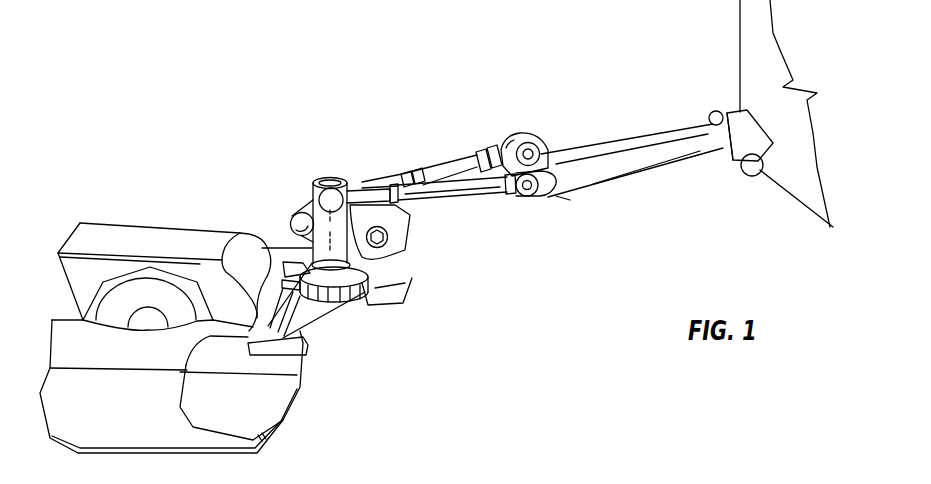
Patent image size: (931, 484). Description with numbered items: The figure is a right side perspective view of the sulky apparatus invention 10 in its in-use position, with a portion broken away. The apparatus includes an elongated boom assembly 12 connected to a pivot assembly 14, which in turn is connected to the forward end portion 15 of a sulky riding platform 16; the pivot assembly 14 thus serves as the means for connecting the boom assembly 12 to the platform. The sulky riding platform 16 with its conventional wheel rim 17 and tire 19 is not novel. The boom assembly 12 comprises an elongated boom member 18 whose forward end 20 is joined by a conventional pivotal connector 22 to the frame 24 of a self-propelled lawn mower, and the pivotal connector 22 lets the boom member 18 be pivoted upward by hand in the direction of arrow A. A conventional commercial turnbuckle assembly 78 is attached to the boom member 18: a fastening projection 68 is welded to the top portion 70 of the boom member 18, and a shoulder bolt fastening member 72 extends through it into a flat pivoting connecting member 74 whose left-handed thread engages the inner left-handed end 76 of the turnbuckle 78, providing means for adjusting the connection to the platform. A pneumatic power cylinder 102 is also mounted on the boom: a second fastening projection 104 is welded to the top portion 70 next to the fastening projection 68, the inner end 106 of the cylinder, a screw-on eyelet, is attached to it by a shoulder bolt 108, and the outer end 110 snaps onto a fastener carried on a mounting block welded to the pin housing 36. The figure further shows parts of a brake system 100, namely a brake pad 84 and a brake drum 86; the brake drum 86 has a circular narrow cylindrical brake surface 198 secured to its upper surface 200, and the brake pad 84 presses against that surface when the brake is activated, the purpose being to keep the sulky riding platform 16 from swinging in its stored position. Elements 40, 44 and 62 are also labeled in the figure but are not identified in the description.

The sulky apparatus invention 10 is at (367, 121).
The elongated boom assembly 12 is at (517, 127).
The pivot assembly 14 is at (318, 178).
The forward end portion 15 is at (316, 330).
The sulky riding platform 16 is at (128, 238).
The wheel rim 17 is at (142, 310).
The elongated boom member 18 is at (572, 205).
The tire 19 is at (165, 290).
The forward end 20 is at (667, 140).
The pivotal connector 22 is at (733, 156).
The frame 24 is at (797, 163).
The pin housing 36 is at (268, 345).
The post 40 is at (352, 223).
The base 44 is at (431, 477).
The clamp bolt 62 is at (374, 250).
The fastening projection 68 is at (545, 146).
The top portion 70 is at (597, 147).
The shoulder bolt fastening member 72 is at (560, 170).
The flat pivoting connecting member 74 is at (513, 143).
The inner left-handed end 76 is at (500, 160).
The turnbuckle assembly 78 is at (448, 160).
The brake pad 84 is at (387, 297).
The brake drum 86 is at (330, 301).
The brake system 100 is at (357, 318).
The pneumatic power cylinder 102 is at (460, 195).
The fastening projection 104 is at (545, 192).
The inner end 106 is at (506, 190).
The shoulder bolt 108 is at (525, 197).
The outer end 110 is at (332, 190).
The circular narrow cylindrical brake surface 198 is at (303, 332).
The upper surface 200 is at (287, 252).
The arrow A is at (583, 147).